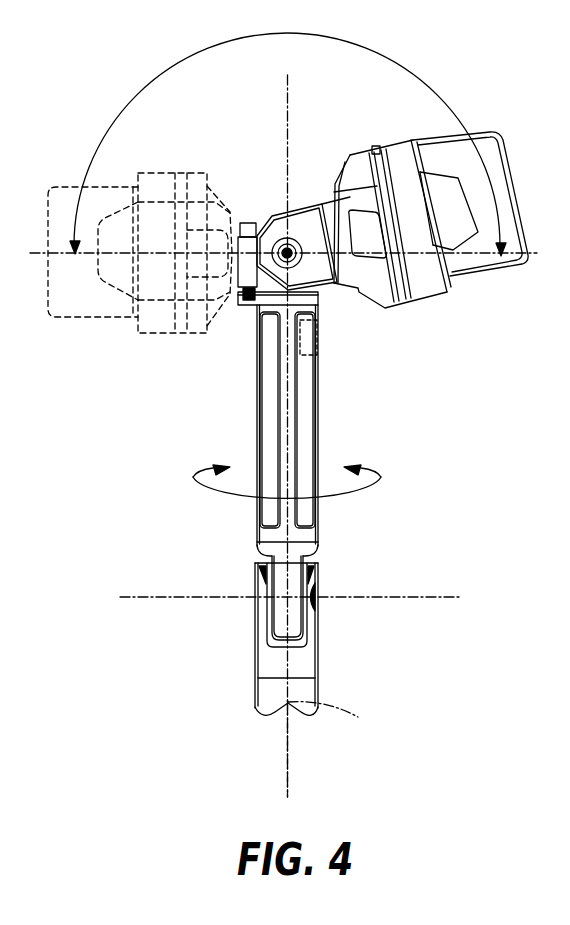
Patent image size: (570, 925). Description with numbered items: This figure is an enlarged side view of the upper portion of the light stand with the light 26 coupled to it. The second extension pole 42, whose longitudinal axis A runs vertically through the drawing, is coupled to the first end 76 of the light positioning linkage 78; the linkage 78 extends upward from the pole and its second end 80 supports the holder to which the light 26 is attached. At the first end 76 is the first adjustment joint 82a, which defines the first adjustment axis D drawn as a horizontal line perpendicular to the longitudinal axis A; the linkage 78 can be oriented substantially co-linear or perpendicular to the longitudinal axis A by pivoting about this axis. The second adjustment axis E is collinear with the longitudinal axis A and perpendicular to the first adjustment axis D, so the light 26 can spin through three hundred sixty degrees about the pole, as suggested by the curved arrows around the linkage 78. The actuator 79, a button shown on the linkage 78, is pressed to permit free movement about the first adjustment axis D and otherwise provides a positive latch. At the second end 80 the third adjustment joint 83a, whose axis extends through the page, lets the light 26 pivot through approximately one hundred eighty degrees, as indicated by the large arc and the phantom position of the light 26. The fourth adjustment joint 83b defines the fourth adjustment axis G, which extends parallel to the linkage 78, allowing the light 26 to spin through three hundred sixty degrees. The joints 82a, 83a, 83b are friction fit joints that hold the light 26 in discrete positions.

The light 26 is at (467, 273).
The second extension pole 42 is at (265, 658).
The first end of light positioning linkage 76 is at (323, 548).
The light positioning linkage 78 is at (262, 431).
The actuator 79 is at (318, 335).
The second end of light positioning linkage 80 is at (320, 303).
The first adjustment joint 82a is at (243, 572).
The third adjustment joint 83a is at (278, 243).
The fourth adjustment joint 83b is at (246, 300).
The fourth adjustment axis G is at (289, 113).
The first adjustment axis D is at (384, 600).
The second adjustment axis E is at (331, 718).
The longitudinal axis A is at (287, 769).